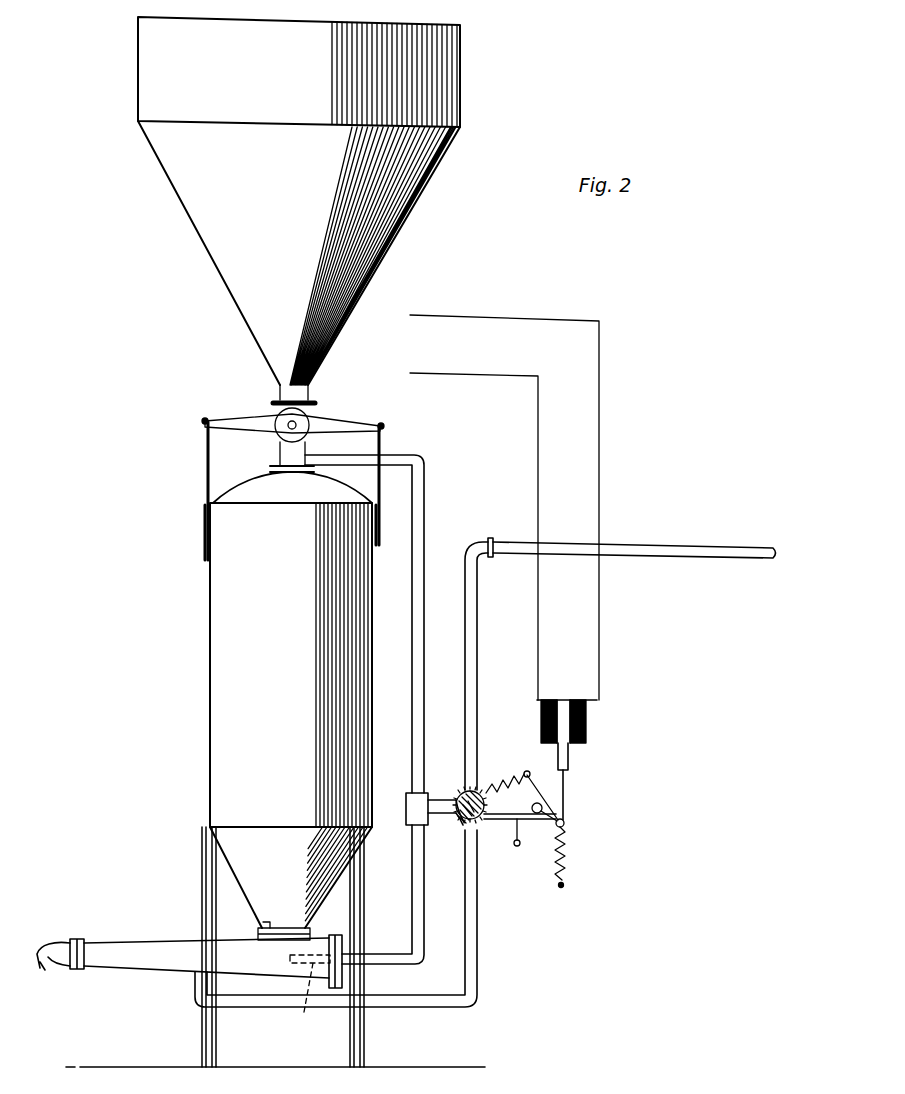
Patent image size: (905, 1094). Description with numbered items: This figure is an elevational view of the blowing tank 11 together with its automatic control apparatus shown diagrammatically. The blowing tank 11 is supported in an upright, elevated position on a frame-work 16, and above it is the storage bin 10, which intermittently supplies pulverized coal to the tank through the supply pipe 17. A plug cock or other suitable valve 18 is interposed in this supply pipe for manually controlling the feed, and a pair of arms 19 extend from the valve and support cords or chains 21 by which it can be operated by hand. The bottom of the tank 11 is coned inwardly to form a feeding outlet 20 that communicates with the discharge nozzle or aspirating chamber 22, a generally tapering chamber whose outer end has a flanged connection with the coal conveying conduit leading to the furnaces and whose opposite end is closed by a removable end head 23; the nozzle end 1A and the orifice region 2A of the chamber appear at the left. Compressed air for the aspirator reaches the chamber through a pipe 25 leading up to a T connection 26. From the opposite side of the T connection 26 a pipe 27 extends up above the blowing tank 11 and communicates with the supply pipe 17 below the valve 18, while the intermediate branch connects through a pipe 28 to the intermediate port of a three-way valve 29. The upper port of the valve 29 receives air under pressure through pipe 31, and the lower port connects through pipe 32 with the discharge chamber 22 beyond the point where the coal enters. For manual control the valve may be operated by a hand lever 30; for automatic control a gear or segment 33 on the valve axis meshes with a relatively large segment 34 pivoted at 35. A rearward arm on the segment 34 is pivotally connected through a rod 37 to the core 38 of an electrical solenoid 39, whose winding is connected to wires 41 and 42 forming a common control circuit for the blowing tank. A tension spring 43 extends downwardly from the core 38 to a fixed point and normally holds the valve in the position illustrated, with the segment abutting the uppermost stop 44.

The storage bin 10 is at (185, 185).
The supply pipe 17 is at (280, 392).
The valve 18 is at (280, 432).
The arms 19 is at (215, 432).
The blowing tank 11 is at (230, 625).
The cords or chains 21 is at (208, 528).
The frame-work 16 is at (205, 884).
The feeding outlet 20 is at (265, 927).
The discharge nozzle or aspirating chamber 22 is at (168, 968).
The nozzle 1A is at (42, 972).
The orifice 2A is at (308, 996).
The removable end head 23 is at (345, 958).
The pipe 27 is at (418, 740).
The T connection 26 is at (420, 823).
The pipe 25 is at (415, 918).
The pipe 28 is at (444, 800).
The pipe 31 is at (472, 657).
The pipe 32 is at (478, 960).
The three-way valve 29 is at (460, 832).
The gear or segment 33 is at (484, 795).
The hand lever 30 is at (566, 820).
The segment 34 is at (527, 771).
The pivot 35 is at (543, 808).
The uppermost stop 44 is at (517, 813).
The rod 37 is at (566, 782).
The core 38 is at (566, 754).
The electrical solenoid 39 is at (590, 722).
The wire 41 is at (599, 658).
The wire 42 is at (539, 658).
The tension spring 43 is at (566, 855).